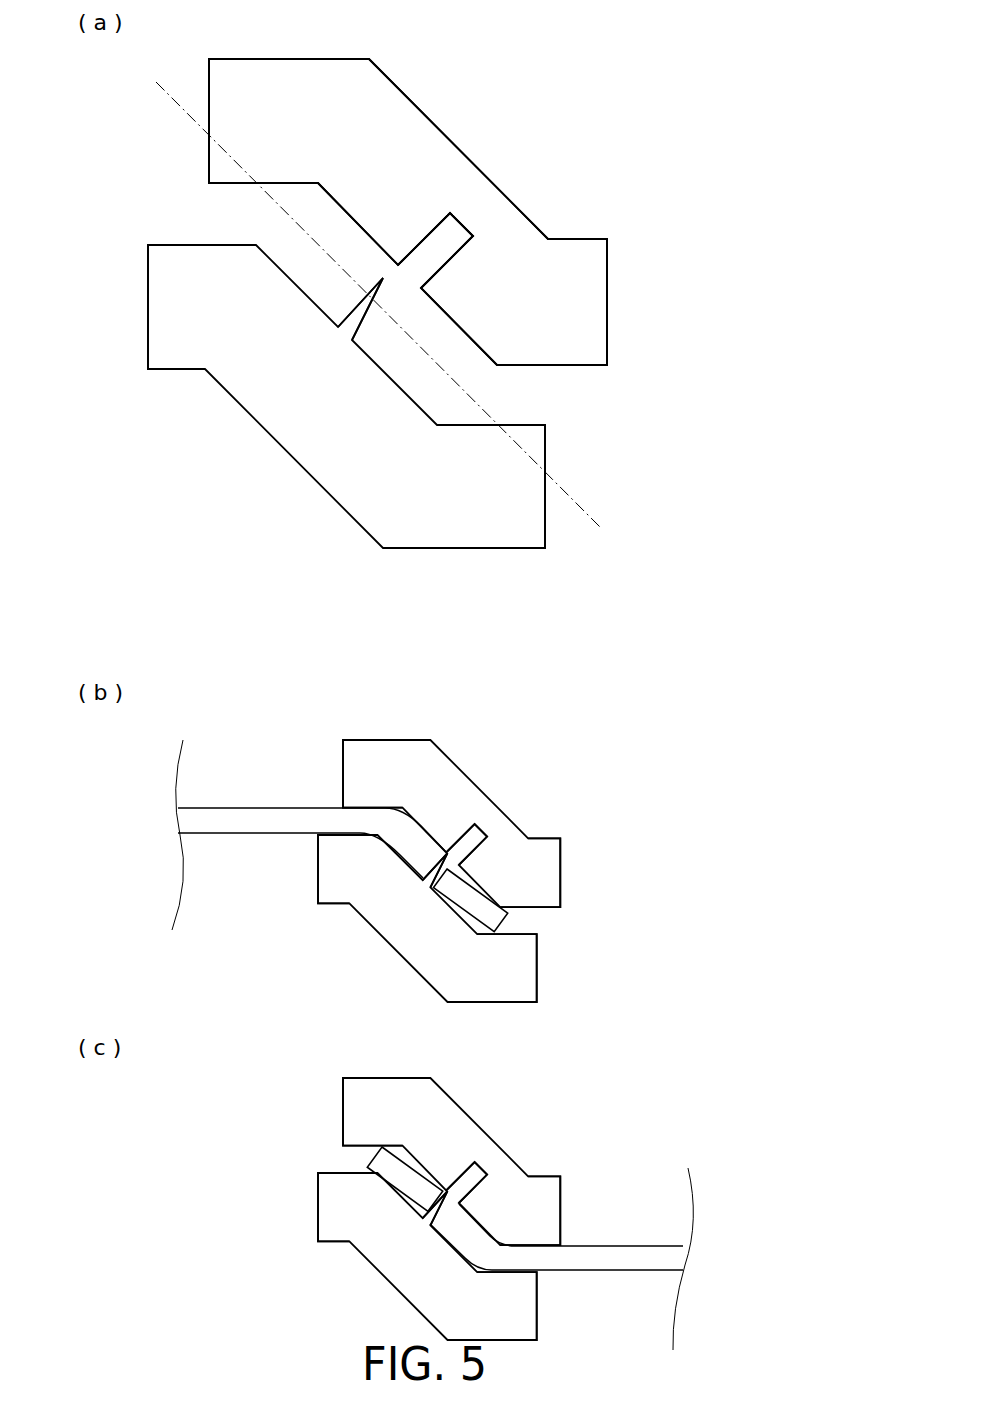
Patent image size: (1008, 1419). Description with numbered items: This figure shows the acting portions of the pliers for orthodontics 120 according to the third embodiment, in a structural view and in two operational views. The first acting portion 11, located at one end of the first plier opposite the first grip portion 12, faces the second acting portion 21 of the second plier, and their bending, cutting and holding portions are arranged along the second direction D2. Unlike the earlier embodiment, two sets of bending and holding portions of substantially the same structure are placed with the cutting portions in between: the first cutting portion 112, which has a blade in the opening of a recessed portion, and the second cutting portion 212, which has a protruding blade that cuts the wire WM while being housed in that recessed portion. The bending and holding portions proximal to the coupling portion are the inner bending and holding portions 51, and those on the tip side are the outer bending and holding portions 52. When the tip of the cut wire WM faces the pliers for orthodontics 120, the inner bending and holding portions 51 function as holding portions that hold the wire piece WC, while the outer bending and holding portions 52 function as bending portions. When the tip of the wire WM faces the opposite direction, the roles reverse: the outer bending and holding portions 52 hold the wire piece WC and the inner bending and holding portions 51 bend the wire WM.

The first acting portion 11 is at (430, 117).
The first grip portion 12 is at (444, 941).
The second acting portion 21 is at (234, 400).
The inner bending and holding portions 51 is at (503, 334).
The outer bending and holding portions 52 is at (282, 172).
The first cutting portion 112 is at (418, 248).
The pliers for orthodontics 120 is at (658, 69).
The second cutting portion 212 is at (363, 343).
The second direction D2 is at (597, 524).
The wire WM is at (242, 815).
The wire piece WC is at (498, 920).